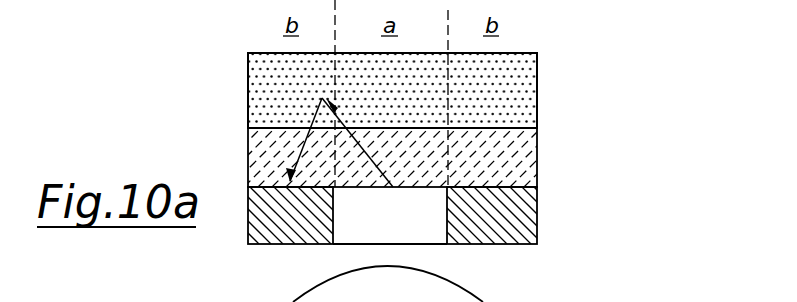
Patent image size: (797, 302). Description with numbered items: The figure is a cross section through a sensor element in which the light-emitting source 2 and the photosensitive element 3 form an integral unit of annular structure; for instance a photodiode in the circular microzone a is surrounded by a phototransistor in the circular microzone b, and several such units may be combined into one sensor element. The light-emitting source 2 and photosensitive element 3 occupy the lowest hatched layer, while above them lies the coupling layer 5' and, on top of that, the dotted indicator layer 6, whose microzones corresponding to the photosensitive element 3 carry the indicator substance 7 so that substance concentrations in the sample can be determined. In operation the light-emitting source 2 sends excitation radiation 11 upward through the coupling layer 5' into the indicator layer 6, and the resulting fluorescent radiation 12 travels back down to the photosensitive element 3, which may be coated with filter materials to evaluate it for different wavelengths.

The light-emitting source 2 is at (403, 233).
The photosensitive element 3 is at (503, 210).
The coupling layer 5' is at (402, 157).
The indicator layer 6 is at (495, 100).
The indicator substance 7 is at (537, 62).
The excitation radiation 11 is at (355, 153).
The fluorescent radiation 12 is at (288, 153).